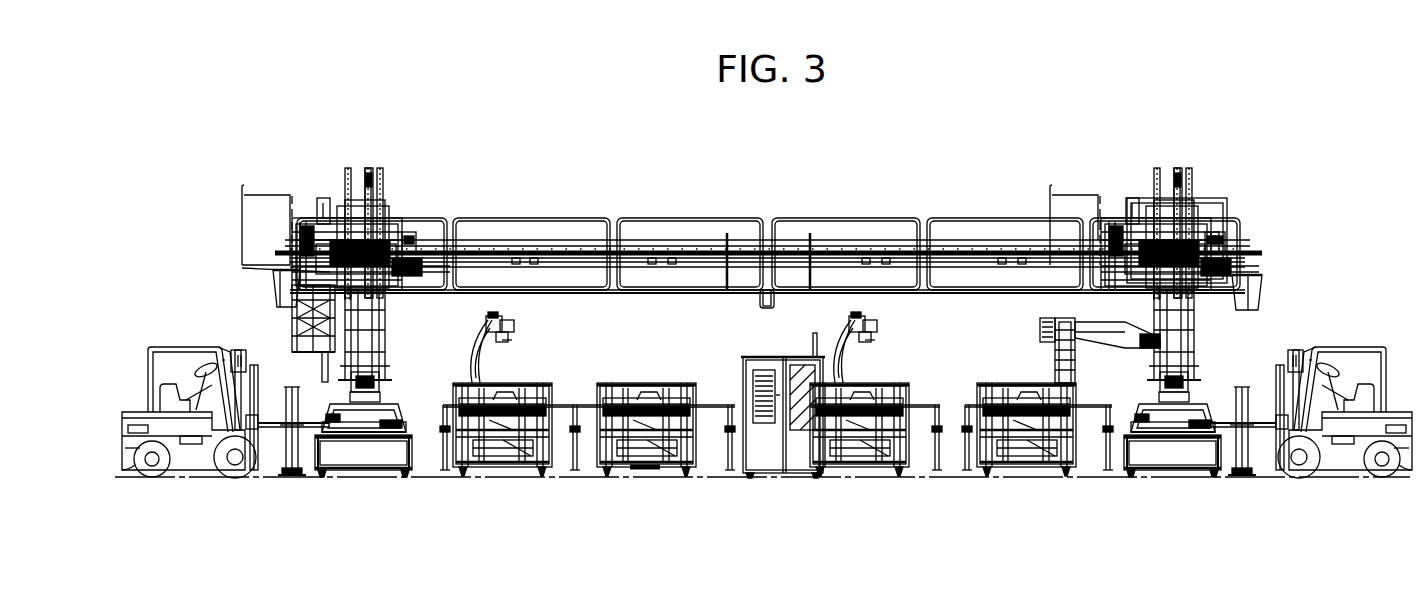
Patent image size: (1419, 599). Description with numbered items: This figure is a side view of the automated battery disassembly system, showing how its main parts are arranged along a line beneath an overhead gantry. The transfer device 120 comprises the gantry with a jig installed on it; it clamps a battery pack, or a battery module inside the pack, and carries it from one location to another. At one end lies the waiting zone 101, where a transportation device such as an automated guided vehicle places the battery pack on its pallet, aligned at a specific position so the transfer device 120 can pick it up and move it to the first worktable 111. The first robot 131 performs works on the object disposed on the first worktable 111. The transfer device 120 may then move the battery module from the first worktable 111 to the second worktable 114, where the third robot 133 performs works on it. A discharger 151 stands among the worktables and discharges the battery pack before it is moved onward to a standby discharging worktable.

The transfer device 120 is at (359, 156).
The waiting zone 101 is at (370, 492).
The first worktable 111 is at (503, 492).
The second worktable 114 is at (868, 492).
The first robot 131 is at (466, 352).
The third robot 133 is at (872, 352).
The discharger 151 is at (768, 492).